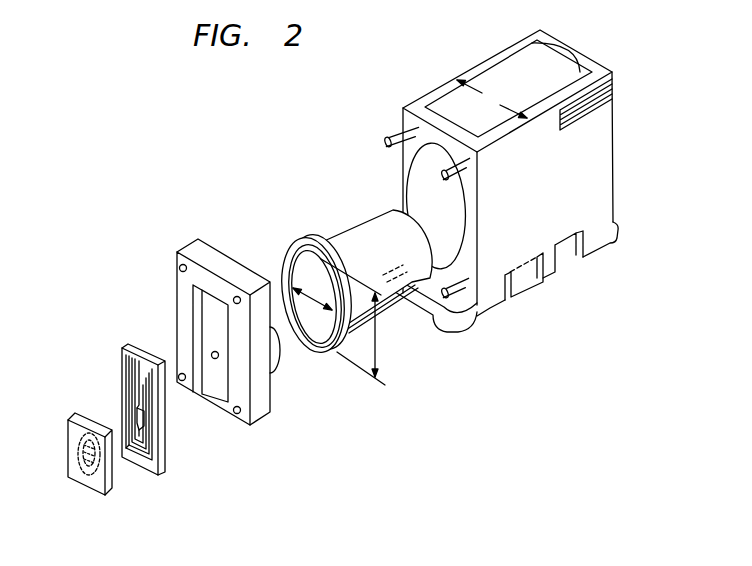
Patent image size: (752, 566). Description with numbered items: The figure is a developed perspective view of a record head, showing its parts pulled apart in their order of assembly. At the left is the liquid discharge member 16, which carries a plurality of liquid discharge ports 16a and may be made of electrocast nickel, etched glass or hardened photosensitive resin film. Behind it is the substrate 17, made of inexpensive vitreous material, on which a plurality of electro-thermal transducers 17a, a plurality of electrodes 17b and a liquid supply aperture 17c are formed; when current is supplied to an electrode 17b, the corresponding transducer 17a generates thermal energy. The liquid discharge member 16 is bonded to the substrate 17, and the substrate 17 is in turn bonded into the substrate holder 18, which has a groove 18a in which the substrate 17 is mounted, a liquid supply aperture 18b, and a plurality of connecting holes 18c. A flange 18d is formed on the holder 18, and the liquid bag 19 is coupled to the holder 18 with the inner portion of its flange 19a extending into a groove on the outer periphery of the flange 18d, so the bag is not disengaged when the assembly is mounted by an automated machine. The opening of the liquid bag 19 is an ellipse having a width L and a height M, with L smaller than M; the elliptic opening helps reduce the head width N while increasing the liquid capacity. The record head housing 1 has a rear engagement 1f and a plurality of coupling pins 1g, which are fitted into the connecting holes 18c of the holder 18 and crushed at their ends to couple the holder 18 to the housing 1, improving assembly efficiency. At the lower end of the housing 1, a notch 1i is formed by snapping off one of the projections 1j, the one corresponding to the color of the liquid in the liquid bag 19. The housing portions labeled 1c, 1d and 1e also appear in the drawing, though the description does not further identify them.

The record head housing 1 is at (615, 182).
The side wall of housing 1c is at (618, 228).
The top window opening 1d is at (577, 48).
The grooves 1e is at (613, 90).
The rear engagement 1f is at (452, 327).
The coupling pins 1g is at (386, 142).
The notch 1i is at (557, 260).
The projection 1j is at (525, 280).
The liquid discharge member 16 is at (77, 437).
The liquid discharge ports 16a is at (80, 480).
The substrate 17 is at (135, 347).
The electro-thermal transducers 17a is at (137, 457).
The electrodes 17b is at (127, 375).
The liquid supply aperture 17c is at (142, 425).
The substrate holder 18 is at (262, 408).
The groove 18a is at (220, 387).
The liquid supply aperture 18b is at (211, 353).
The connecting holes 18c is at (169, 263).
The flange 18d is at (278, 362).
The liquid bag 19 is at (353, 240).
The flange 19a is at (317, 352).
The width L is at (310, 290).
The height M is at (353, 322).
The head width N is at (492, 99).